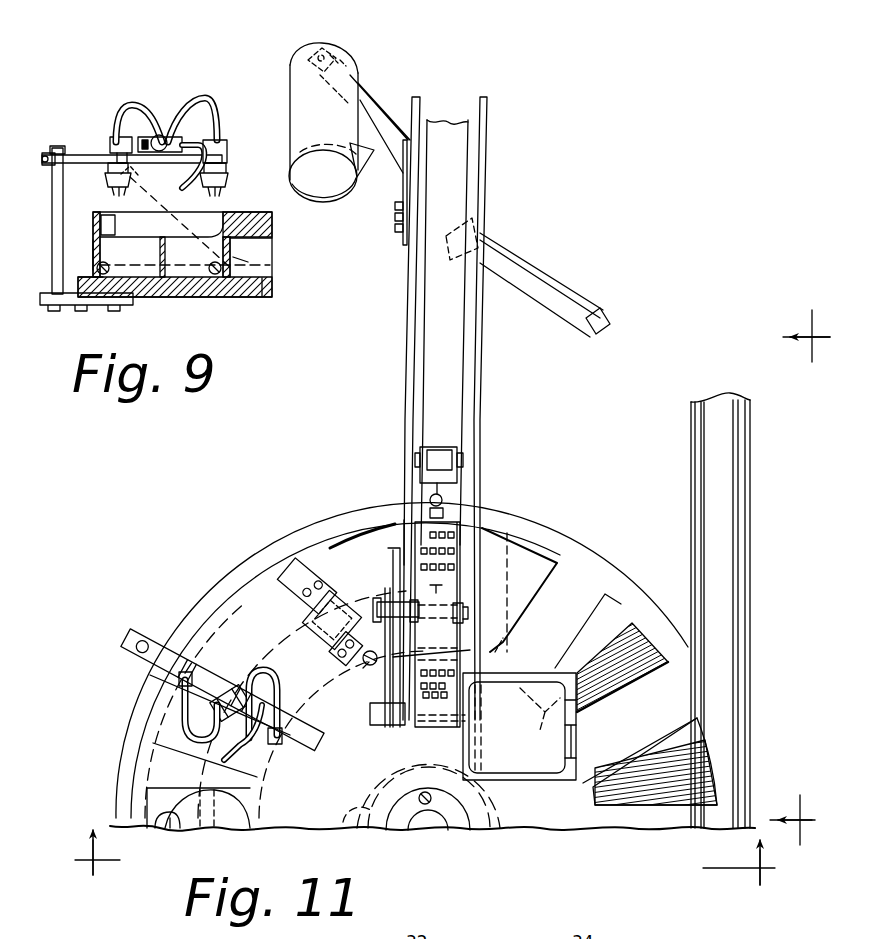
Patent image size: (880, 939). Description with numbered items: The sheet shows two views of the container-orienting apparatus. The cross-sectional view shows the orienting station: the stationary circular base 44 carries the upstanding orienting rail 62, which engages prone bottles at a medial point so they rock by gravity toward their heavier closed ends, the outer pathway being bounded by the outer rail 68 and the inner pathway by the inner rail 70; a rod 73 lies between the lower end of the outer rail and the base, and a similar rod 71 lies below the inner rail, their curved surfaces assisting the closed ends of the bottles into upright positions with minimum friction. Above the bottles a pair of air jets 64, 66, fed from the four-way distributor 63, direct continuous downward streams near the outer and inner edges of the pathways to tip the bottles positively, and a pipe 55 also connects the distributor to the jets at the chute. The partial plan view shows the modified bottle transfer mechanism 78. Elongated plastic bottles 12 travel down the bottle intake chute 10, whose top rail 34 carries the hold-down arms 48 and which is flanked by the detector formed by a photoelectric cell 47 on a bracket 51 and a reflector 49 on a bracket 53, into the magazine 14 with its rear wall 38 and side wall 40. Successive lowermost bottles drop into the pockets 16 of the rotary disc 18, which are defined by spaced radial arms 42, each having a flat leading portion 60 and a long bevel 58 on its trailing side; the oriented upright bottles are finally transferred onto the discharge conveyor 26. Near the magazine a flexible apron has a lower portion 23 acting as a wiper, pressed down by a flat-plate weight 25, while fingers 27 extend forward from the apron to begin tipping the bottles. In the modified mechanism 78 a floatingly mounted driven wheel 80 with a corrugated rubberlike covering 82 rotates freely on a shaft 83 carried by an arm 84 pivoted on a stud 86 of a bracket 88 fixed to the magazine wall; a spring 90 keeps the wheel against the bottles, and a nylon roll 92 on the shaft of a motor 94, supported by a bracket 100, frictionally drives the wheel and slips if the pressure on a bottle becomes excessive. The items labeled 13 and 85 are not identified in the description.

In FIG. 11, the bottle intake chute 10 is at (490, 378).
In FIG. 11, the elongated plastic bottles 12 is at (421, 867).
In FIG. 11, the section line 13- 13 is at (807, 577).
In FIG. 11, the magazine 14 is at (463, 594).
In FIG. 11, the pockets 16 is at (586, 590).
In FIG. 9, the rotary conveyor disc 18 is at (268, 235).
In FIG. 11, the rotary conveyor disc 18 is at (536, 578).
In FIG. 11, the lower portion of apron 23 is at (290, 600).
In FIG. 11, the weight 25 is at (323, 550).
In FIG. 11, the discharge conveyor 26 is at (726, 533).
In FIG. 11, the fingers 27 is at (287, 603).
In FIG. 11, the top rail 34 is at (426, 336).
In FIG. 11, the rear wall 38 is at (428, 530).
In FIG. 11, the side wall 40 is at (463, 492).
In FIG. 11, the radial arms 42 is at (632, 622).
In FIG. 9, the stationary circular base 44 is at (272, 283).
In FIG. 11, the photoelectric cell 47 is at (348, 56).
In FIG. 11, the arms 48 is at (418, 462).
In FIG. 11, the reflector 49 is at (608, 330).
In FIG. 11, the bracket 51 is at (388, 113).
In FIG. 11, the bracket 53 is at (553, 277).
In FIG. 9, the pipe 55 is at (125, 128).
In FIG. 11, the bevel 58 is at (641, 685).
In FIG. 11, the flat leading portion 60 is at (612, 604).
In FIG. 9, the orienting rail 62 is at (185, 272).
In FIG. 11, the orienting rail 62 is at (303, 693).
In FIG. 9, the four-way distributor 63 is at (165, 130).
In FIG. 11, the four-way distributor 63 is at (220, 713).
In FIG. 9, the air jet 64 is at (105, 187).
In FIG. 9, the air jet 66 is at (228, 187).
In FIG. 9, the outer rail 68 is at (93, 257).
In FIG. 11, the outer rail 68 is at (211, 624).
In FIG. 9, the inner rail 70 is at (233, 257).
In FIG. 9, the rod 71 is at (218, 276).
In FIG. 9, the rod 73 is at (103, 280).
In FIG. 11, the modified bottle depositing mechanism 78 is at (517, 525).
In FIG. 11, the driven wheel 80 is at (414, 545).
In FIG. 11, the corrugated rubberlike covering 82 is at (450, 598).
In FIG. 11, the shaft 83 is at (347, 538).
In FIG. 11, the arm 84 is at (410, 600).
In FIG. 11, the slide block 85 is at (431, 634).
In FIG. 11, the stud 86 is at (403, 724).
In FIG. 11, the bracket 88 is at (383, 726).
In FIG. 11, the spring 90 is at (368, 666).
In FIG. 11, the roll 92 is at (440, 740).
In FIG. 11, the motor 94 is at (527, 765).
In FIG. 11, the bracket 100 is at (541, 782).